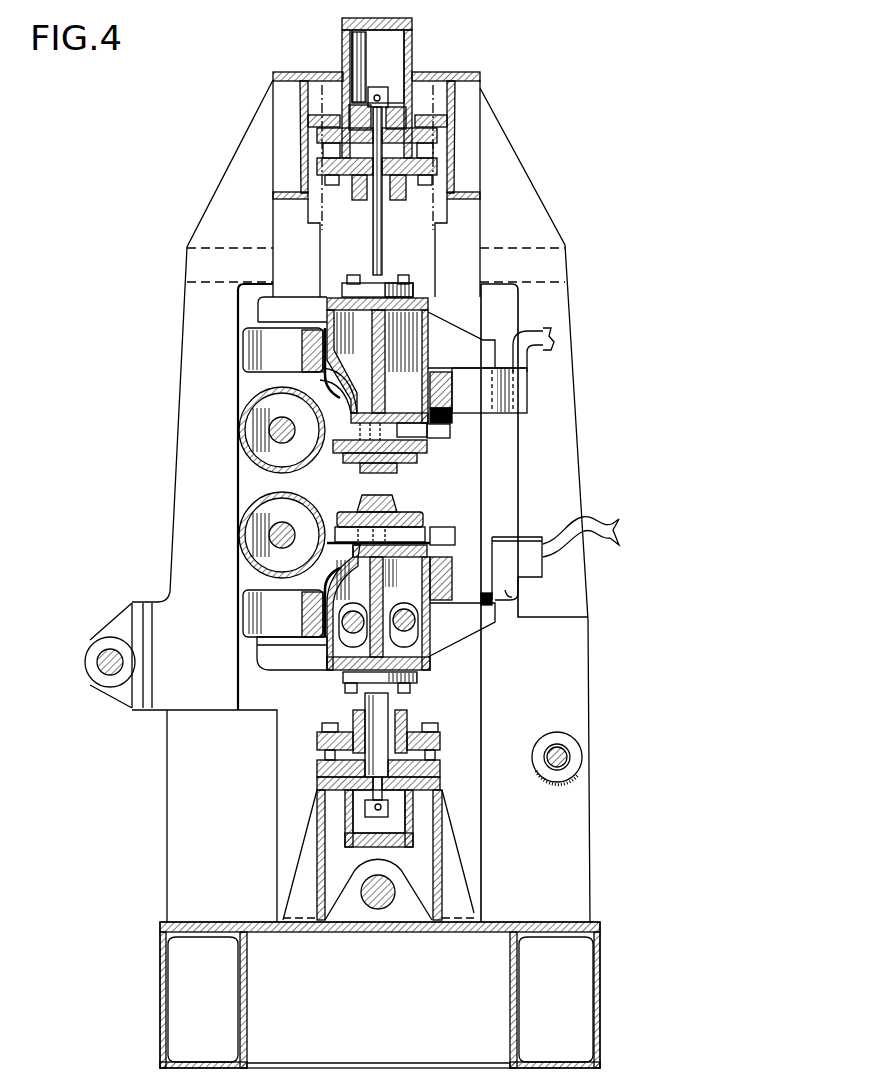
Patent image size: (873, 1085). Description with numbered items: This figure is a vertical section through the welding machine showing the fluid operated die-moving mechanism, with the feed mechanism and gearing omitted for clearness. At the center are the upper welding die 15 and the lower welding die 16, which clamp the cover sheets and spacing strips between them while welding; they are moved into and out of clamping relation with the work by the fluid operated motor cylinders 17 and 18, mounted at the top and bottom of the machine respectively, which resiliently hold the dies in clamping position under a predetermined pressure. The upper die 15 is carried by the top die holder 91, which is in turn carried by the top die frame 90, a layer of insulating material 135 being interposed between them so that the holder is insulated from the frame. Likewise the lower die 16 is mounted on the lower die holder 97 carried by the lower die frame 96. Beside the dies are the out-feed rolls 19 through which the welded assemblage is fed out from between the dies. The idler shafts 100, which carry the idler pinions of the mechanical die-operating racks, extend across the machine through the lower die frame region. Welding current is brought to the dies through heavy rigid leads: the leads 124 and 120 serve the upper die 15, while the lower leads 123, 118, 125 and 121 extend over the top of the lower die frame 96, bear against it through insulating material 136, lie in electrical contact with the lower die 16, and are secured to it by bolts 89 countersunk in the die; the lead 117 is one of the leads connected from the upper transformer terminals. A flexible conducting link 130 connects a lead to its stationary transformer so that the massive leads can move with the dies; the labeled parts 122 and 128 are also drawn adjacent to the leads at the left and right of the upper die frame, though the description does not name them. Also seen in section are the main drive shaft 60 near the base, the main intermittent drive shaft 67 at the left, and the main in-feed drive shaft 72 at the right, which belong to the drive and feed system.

The upper welding die 15 is at (395, 482).
The lower welding die 16 is at (393, 497).
The fluid operated motor cylinder 17 is at (412, 48).
The fluid operated motor cylinder 18 is at (420, 815).
The out-feed rolls 19 is at (282, 482).
The main drive shaft 60 is at (380, 903).
The main intermittent drive shaft 67 is at (100, 664).
The main in-feed drive shaft 72 is at (578, 762).
The bolts 89 is at (403, 503).
The top die frame 90 is at (400, 408).
The top die holder 91 is at (340, 453).
The lower die frame 96 is at (407, 592).
The lower die holder 97 is at (343, 507).
The idler shafts 100 is at (353, 640).
The lead 117 is at (447, 432).
The lead 118 is at (432, 540).
The lead 120 is at (487, 397).
The lead 121 is at (512, 596).
The guide track 122 is at (330, 392).
The lead 123 is at (330, 582).
The lead 124 is at (243, 343).
The lead 125 is at (255, 616).
The conduit 128 is at (545, 338).
The flexible conducting link 130 is at (604, 549).
The insulating material 135 is at (420, 400).
The insulating material 136 is at (400, 525).